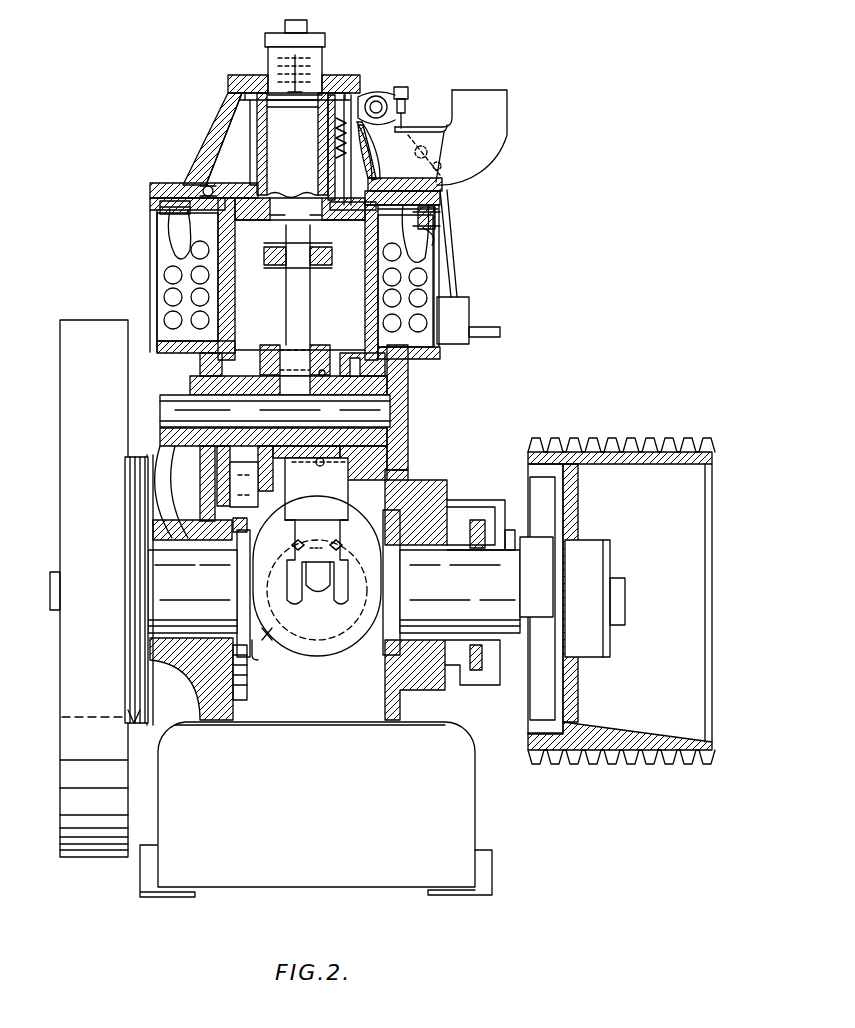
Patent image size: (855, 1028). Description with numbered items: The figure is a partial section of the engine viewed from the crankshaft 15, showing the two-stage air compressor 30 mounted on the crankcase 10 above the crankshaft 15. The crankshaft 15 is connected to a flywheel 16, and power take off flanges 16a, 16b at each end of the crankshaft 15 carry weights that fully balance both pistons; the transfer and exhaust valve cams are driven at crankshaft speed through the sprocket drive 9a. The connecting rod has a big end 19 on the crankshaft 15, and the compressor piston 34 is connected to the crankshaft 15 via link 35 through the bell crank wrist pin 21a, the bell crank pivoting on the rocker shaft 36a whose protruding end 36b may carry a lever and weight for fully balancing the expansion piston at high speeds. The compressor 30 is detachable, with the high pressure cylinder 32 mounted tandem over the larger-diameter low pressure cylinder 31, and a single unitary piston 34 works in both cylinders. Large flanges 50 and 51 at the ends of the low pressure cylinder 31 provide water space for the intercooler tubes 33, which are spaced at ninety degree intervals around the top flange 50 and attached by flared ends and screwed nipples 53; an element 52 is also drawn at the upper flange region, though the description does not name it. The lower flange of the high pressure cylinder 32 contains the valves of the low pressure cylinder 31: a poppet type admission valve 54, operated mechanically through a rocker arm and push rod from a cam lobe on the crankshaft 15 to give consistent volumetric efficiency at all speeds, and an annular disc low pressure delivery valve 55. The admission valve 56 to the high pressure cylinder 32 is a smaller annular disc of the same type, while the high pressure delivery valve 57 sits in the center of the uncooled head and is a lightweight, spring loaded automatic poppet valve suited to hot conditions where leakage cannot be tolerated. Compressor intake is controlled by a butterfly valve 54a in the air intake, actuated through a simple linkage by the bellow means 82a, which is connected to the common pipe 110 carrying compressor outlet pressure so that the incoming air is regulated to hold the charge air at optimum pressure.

The sprocket drive 9a is at (478, 522).
The crankcase 10 is at (398, 375).
The crankshaft 15 is at (412, 608).
The flywheel 16 is at (95, 340).
The power take off flange 16a is at (128, 468).
The power take off flange 16b is at (570, 485).
The big end 19 is at (262, 610).
The bell crank wrist pin 21a is at (275, 358).
The air compressor 30 is at (215, 135).
The low pressure cylinder 31 is at (329, 285).
The high pressure cylinder 32 is at (262, 165).
The intercooler tubes 33 is at (422, 300).
The compressor piston 34 is at (247, 255).
The link 35 is at (296, 312).
The rocker shaft 36a is at (385, 413).
The protruding end 36b is at (160, 400).
The top flange 50 is at (432, 232).
The lower flange 51 is at (420, 355).
The valve plate 52 is at (432, 195).
The screwed nipples 53 is at (430, 220).
The admission valve 54 is at (348, 195).
The butterfly valve 54a is at (418, 130).
The low pressure delivery valve 55 is at (205, 190).
The admission valve 56 is at (258, 78).
The high pressure delivery valve 57 is at (308, 62).
The bellow means 82a is at (466, 307).
The pipe 110 is at (486, 336).